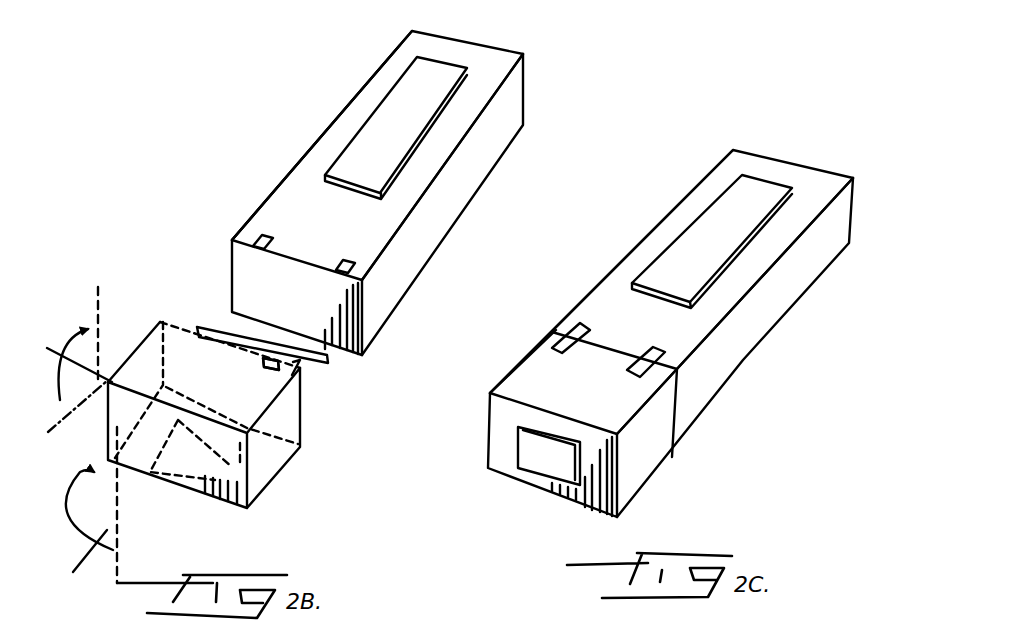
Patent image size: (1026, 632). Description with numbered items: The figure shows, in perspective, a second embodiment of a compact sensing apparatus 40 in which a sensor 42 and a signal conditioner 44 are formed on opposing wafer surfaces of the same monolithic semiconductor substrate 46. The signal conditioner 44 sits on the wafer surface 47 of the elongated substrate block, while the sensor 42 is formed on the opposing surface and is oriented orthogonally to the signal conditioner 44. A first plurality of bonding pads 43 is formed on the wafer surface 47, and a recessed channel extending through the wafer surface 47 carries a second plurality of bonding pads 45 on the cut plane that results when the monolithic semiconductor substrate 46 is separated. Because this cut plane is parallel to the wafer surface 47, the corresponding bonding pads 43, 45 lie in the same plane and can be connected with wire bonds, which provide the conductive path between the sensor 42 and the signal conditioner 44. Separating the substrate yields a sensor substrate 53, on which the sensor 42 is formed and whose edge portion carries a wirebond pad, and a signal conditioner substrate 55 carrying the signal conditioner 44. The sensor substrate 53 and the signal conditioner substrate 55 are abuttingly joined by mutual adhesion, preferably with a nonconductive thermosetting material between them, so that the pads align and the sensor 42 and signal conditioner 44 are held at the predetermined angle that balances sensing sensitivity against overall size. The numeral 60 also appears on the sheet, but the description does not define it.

In FIG. 2B, the sensing apparatus 40 is at (222, 122).
In FIG. 2C, the sensing apparatus 40 is at (604, 194).
In FIG. 2B, the sensor 42 is at (212, 478).
In FIG. 2C, the sensor 42 is at (540, 465).
In FIG. 2B, the first plurality of bonding pads 43 is at (274, 356).
In FIG. 2B, the signal conditioner 44 is at (385, 125).
In FIG. 2C, the signal conditioner 44 is at (772, 192).
In FIG. 2B, the second plurality of bonding pads 45 is at (270, 241).
In FIG. 2B, the monolithic semiconductor substrate 46 is at (382, 313).
In FIG. 2C, the monolithic semiconductor substrate 46 is at (703, 402).
In FIG. 2B, the wafer surface 47 is at (287, 218).
In FIG. 2C, the wafer surface 47 is at (603, 305).
In FIG. 2B, the sensor substrate 53 is at (192, 332).
In FIG. 2C, the sensor substrate 53 is at (513, 358).
In FIG. 2B, the signal conditioner substrate 55 is at (401, 46).
In FIG. 2C, the signal conditioner substrate 55 is at (577, 303).
In FIG. 2C, the component 60 is at (718, 631).